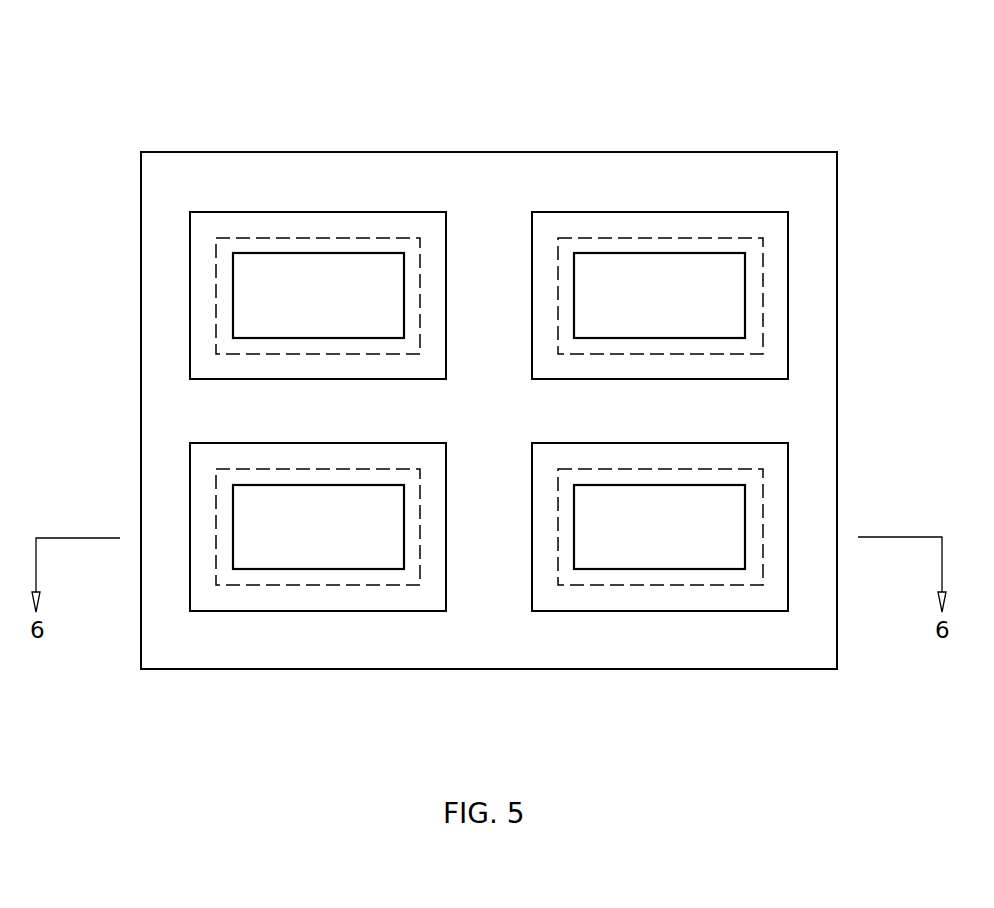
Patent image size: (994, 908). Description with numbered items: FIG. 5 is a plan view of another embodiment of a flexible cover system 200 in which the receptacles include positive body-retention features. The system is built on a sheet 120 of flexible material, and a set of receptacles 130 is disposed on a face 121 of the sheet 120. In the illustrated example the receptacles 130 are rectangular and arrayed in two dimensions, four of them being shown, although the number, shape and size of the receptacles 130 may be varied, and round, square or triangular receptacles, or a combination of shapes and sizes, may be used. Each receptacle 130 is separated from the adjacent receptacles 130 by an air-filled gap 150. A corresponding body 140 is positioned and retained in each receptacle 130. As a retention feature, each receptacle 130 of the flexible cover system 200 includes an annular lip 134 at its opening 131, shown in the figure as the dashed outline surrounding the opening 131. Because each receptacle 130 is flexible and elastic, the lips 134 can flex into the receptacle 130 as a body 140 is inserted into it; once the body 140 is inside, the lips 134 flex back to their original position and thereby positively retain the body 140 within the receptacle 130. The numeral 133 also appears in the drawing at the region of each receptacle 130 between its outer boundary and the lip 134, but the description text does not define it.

The flexible cover system 200 is at (82, 95).
The sheet 120 is at (140, 228).
The face 121 is at (185, 168).
The receptacle 130 is at (371, 190).
The opening 131 is at (253, 252).
The outer portion of conductive pad 133 is at (222, 223).
The annular lip 134 is at (325, 247).
The body 140 is at (300, 298).
The air-filled gap 150 is at (512, 323).